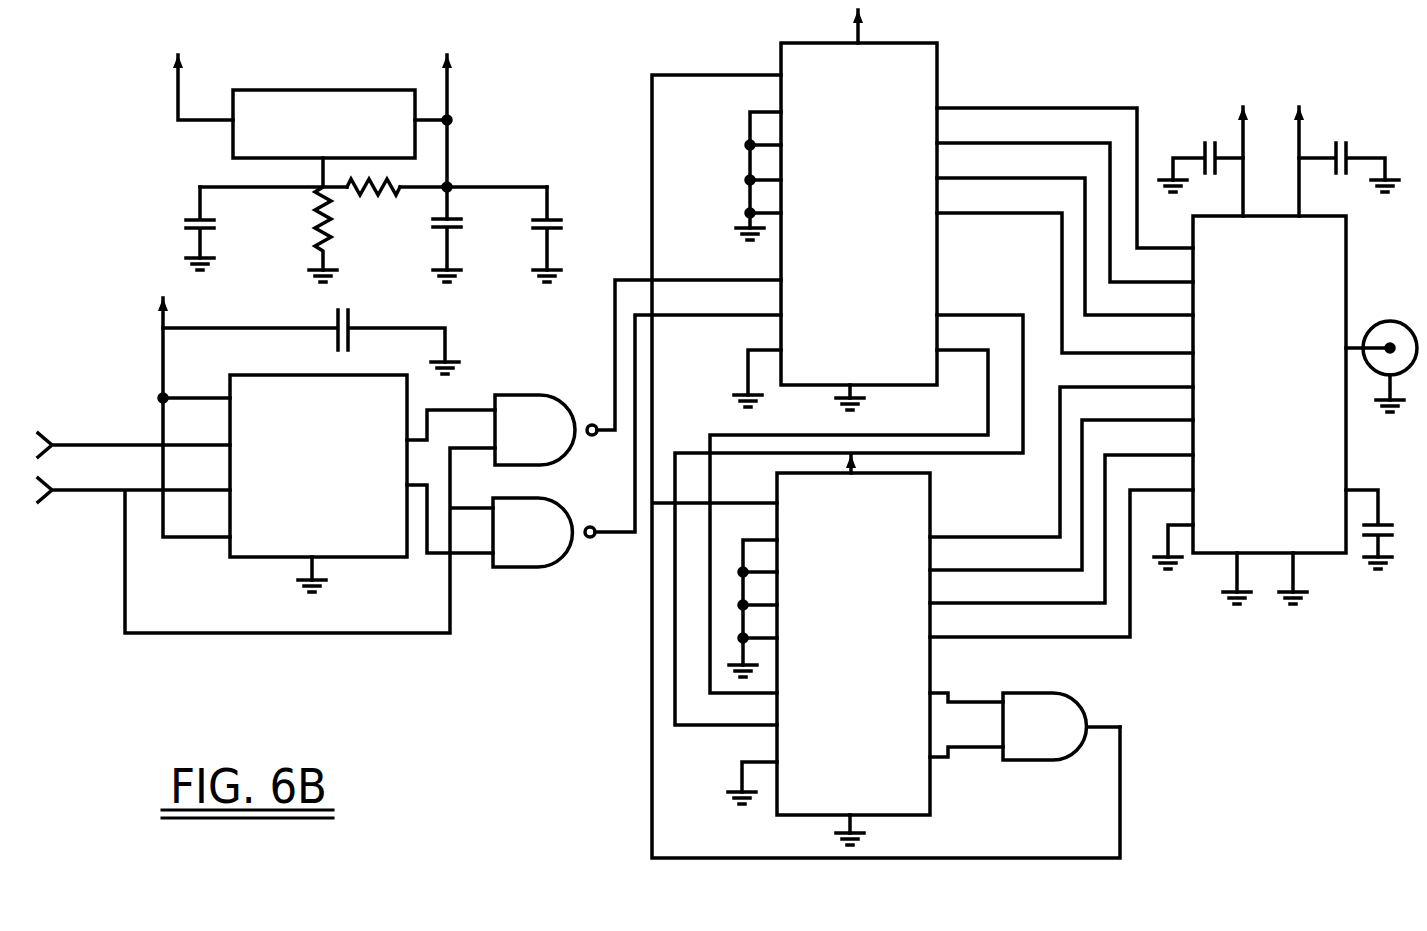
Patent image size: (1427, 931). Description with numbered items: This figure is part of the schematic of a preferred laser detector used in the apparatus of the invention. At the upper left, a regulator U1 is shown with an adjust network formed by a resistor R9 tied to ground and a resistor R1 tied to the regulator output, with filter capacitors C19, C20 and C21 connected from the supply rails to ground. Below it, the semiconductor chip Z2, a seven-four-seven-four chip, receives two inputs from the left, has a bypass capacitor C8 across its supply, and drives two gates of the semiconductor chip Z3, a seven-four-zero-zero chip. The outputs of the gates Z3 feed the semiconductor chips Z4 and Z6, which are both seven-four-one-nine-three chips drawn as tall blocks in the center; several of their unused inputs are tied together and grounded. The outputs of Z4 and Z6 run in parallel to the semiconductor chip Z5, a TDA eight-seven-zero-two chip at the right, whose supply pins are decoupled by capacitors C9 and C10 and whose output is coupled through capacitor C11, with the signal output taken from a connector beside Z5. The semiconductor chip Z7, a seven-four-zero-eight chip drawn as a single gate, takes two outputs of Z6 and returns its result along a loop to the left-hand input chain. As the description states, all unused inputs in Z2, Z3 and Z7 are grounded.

The voltage regulator U1 is at (360, 137).
The resistor R1 is at (373, 202).
The resistor R9 is at (303, 220).
The capacitor C19 is at (173, 228).
The capacitor C20 is at (474, 244).
The capacitor C21 is at (575, 234).
The capacitor C8 is at (311, 342).
The semiconductor chip Z2 is at (266, 465).
The semiconductor chip Z3 is at (637, 423).
The semiconductor chip Z4 is at (922, 434).
The semiconductor chip Z5 is at (1285, 355).
The semiconductor chip Z6 is at (960, 616).
The semiconductor chip Z7 is at (1061, 726).
The capacitor C9 is at (1201, 152).
The capacitor C10 is at (1349, 152).
The capacitor C11 is at (1386, 529).